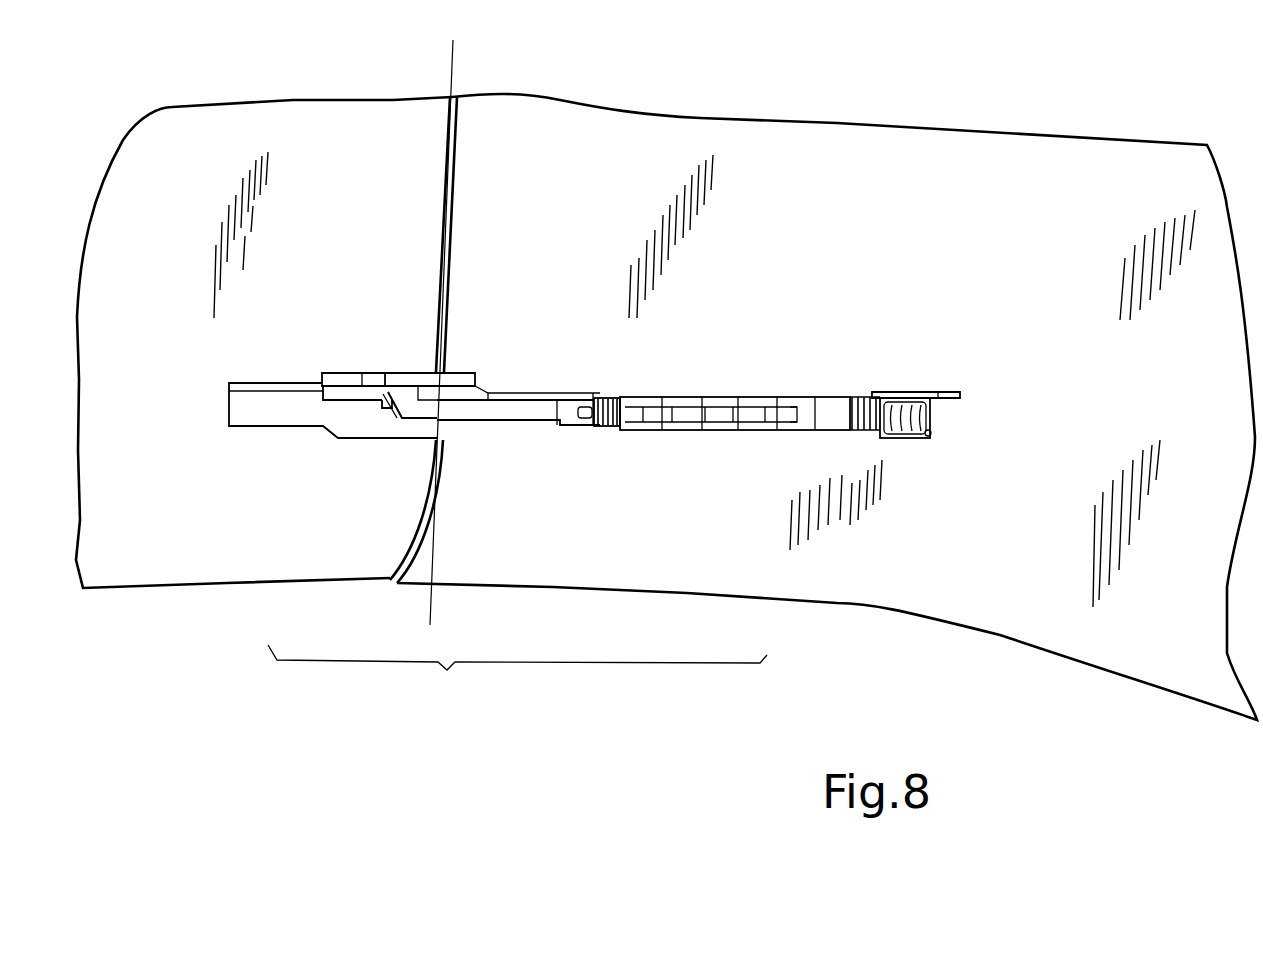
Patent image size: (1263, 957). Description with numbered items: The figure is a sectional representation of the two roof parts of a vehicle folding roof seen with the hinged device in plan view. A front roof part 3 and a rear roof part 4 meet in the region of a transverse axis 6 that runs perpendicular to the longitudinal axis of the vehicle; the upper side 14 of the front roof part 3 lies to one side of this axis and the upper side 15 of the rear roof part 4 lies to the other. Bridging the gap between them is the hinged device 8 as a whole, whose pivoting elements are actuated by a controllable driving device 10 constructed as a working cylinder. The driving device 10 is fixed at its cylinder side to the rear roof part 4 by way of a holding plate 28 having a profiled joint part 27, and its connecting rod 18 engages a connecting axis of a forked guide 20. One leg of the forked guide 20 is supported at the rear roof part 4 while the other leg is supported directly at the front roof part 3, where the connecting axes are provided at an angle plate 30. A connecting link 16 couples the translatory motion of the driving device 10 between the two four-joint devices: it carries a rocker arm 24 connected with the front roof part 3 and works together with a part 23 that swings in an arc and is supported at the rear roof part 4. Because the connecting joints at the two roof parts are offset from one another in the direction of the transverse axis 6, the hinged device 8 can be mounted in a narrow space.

The front roof part 3 is at (172, 208).
The rear roof part 4 is at (1010, 172).
The transverse axis 6 is at (455, 53).
The hinged device 8 is at (447, 670).
The driving device 10 is at (802, 385).
The upper side of the front roof part 14 is at (178, 543).
The upper side of the rear roof part 15 is at (960, 553).
The connecting link 16 is at (395, 413).
The connecting rod 18 is at (613, 422).
The forked guide 20 is at (497, 413).
The part which swings in an arc 23 is at (420, 372).
The rocker arm 24 is at (343, 372).
The profiled joint part 27 is at (927, 429).
The holding plate 28 is at (928, 380).
The angle plate 30 is at (226, 410).